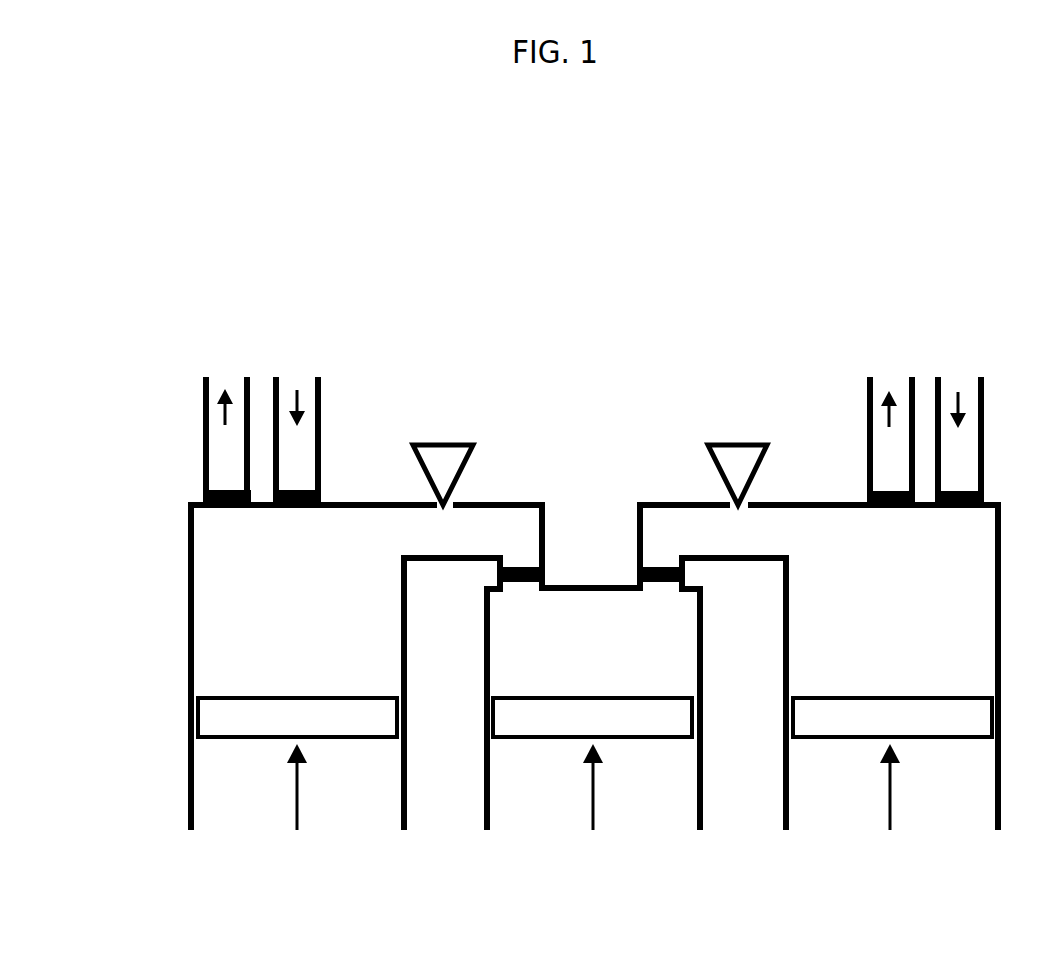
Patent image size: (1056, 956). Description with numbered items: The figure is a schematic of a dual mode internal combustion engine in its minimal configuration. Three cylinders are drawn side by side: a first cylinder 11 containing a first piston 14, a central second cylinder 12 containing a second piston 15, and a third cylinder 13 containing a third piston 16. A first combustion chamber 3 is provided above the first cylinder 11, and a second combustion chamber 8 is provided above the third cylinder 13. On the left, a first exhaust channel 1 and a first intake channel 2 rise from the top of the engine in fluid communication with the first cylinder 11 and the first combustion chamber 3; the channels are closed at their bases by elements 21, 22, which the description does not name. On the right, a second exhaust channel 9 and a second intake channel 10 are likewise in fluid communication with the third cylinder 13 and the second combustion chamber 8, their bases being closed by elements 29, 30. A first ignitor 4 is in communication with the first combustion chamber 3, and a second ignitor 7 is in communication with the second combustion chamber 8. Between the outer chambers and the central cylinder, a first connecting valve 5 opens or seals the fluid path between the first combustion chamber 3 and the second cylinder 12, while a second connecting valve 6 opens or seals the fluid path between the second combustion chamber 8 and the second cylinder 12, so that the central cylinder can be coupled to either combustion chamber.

The first exhaust channel 1 is at (218, 362).
The first intake channel 2 is at (297, 362).
The first combustion chamber 3 is at (385, 527).
The first ignitor 4 is at (443, 443).
The first connecting valve 5 is at (523, 557).
The second connecting valve 6 is at (655, 557).
The second ignitor 7 is at (737, 442).
The second combustion chamber 8 is at (808, 523).
The second exhaust channel 9 is at (890, 362).
The second intake channel 10 is at (958, 362).
The first cylinder 11 is at (237, 667).
The second cylinder 12 is at (530, 667).
The third cylinder 13 is at (827, 667).
The first piston 14 is at (260, 717).
The second piston 15 is at (552, 717).
The third piston 16 is at (840, 717).
The inlet membrane 21 is at (228, 487).
The outlet membrane 22 is at (287, 487).
The inlet membrane 29 is at (890, 487).
The outlet membrane 30 is at (952, 487).